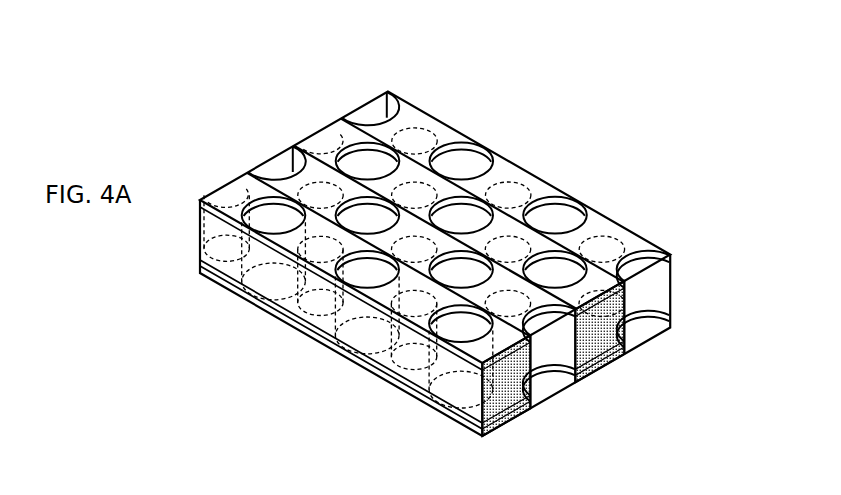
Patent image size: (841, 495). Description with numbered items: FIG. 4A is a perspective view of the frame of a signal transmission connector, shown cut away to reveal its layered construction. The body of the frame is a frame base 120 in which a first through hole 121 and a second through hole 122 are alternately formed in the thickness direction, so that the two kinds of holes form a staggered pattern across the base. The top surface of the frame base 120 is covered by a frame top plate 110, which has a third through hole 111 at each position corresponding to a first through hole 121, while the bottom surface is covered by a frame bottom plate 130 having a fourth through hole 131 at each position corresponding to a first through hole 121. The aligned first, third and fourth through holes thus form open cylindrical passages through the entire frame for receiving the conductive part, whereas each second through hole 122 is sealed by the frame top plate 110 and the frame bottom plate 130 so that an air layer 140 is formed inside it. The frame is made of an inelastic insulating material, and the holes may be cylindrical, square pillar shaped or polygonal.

The frame top plate 110 is at (624, 224).
The third through hole 111 is at (272, 198).
The frame base 120 is at (627, 338).
The first through hole 121 is at (262, 272).
The second through hole 122 is at (416, 190).
The frame bottom plate 130 is at (593, 377).
The fourth through hole 131 is at (280, 298).
The air layer 140 is at (407, 347).